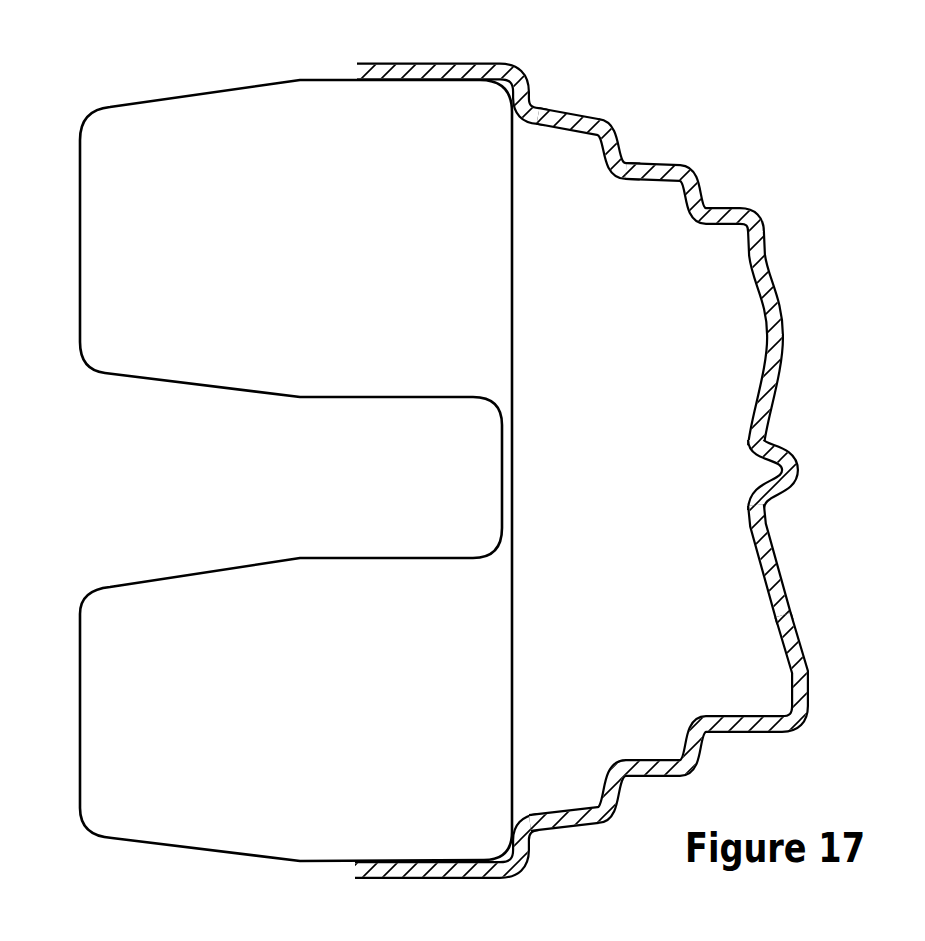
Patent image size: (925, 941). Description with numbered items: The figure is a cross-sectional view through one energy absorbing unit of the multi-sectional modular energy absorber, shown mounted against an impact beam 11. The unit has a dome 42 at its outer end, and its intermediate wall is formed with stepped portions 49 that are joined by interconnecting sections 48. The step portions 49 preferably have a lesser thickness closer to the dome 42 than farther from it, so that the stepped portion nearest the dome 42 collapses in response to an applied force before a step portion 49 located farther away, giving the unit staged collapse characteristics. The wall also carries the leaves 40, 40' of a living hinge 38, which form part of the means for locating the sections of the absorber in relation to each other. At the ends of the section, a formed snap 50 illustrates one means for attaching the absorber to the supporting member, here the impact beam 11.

The impact beam 11 is at (78, 687).
The living hinge 38 is at (797, 473).
The leaf of living hinge 40 is at (598, 470).
The leaf of living hinge 40' is at (615, 470).
The dome 42 is at (780, 577).
The interconnecting sections 48 is at (620, 143).
The stepped portions 49 is at (668, 167).
The formed snap 50 is at (425, 870).